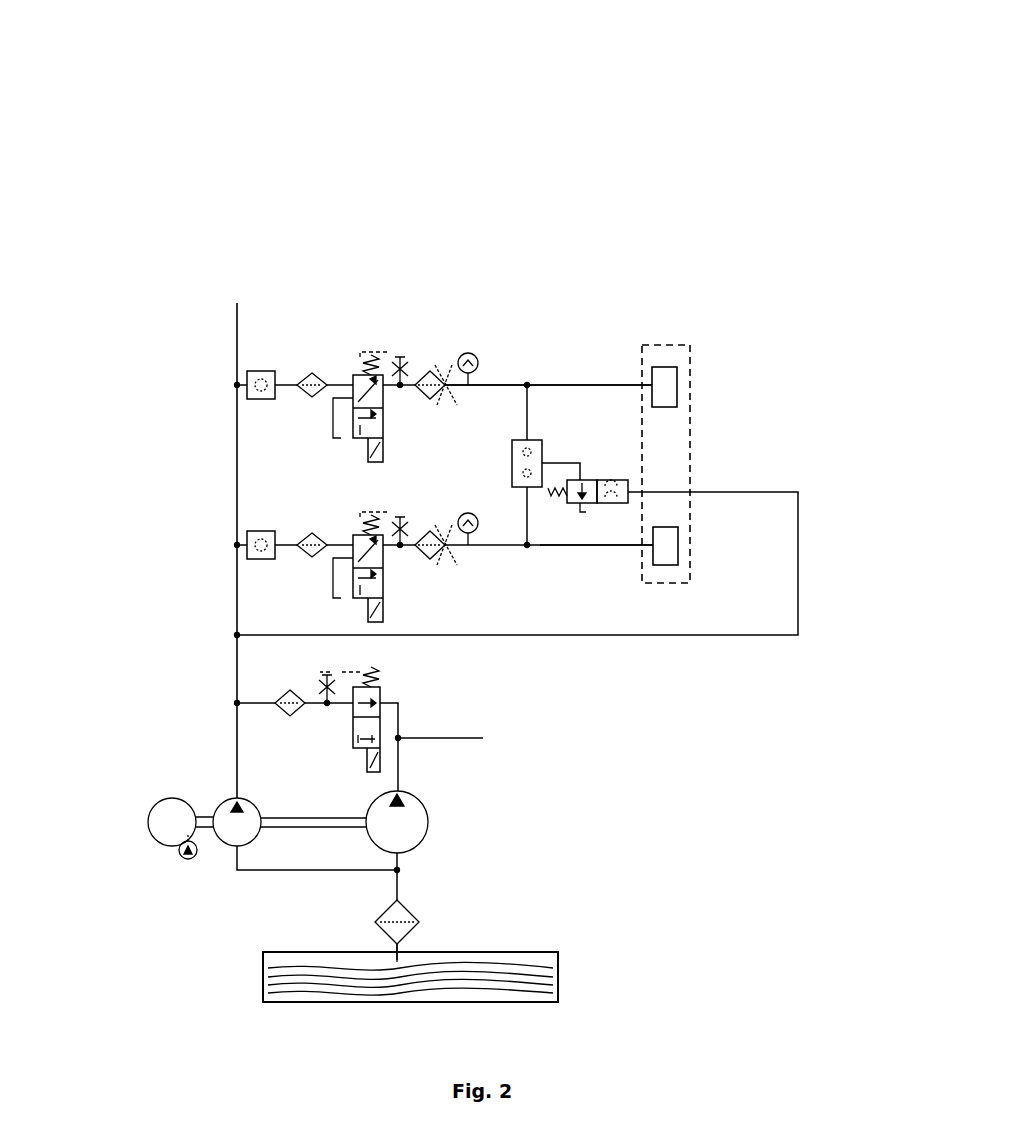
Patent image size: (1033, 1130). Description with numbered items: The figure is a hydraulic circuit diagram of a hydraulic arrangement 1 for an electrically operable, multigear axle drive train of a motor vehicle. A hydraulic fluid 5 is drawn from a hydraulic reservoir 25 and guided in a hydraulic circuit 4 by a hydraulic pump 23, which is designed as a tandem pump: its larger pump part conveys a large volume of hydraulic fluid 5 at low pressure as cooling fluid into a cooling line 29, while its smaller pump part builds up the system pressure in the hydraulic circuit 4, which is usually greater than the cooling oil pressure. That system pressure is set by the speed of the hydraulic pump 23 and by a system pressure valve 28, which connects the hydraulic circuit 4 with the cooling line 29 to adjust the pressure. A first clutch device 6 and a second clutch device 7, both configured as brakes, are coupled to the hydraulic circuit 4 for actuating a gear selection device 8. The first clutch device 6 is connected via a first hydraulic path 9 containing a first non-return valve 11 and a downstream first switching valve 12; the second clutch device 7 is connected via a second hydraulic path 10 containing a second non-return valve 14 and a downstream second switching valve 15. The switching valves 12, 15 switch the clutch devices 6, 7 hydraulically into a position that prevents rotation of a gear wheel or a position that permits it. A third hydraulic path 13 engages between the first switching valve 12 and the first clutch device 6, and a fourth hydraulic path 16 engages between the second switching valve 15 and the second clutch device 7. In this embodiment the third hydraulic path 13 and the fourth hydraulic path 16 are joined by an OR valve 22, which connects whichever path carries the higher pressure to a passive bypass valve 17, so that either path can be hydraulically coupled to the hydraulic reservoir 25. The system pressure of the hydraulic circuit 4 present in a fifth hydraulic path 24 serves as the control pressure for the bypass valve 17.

The hydraulic arrangement 1 is at (267, 132).
The hydraulic circuit 4 is at (237, 740).
The hydraulic fluid 5 is at (558, 975).
The first clutch device 6 is at (668, 540).
The second clutch device 7 is at (670, 385).
The gear selection device 8 is at (668, 344).
The first hydraulic path 9 is at (560, 547).
The second hydraulic path 10 is at (490, 385).
The first non-return valve 11 is at (262, 531).
The first switching valve 12 is at (433, 580).
The third hydraulic path 13 is at (525, 522).
The second non-return valve 14 is at (262, 371).
The second switching valve 15 is at (382, 258).
The fourth hydraulic path 16 is at (532, 385).
The passive bypass valve 17 is at (590, 505).
The OR valve 22 is at (512, 470).
The hydraulic pump 23 is at (203, 858).
The fifth hydraulic path 24 is at (495, 638).
The hydraulic reservoir 25 is at (333, 440).
The system pressure valve 28 is at (385, 690).
The cooling line 29 is at (440, 740).